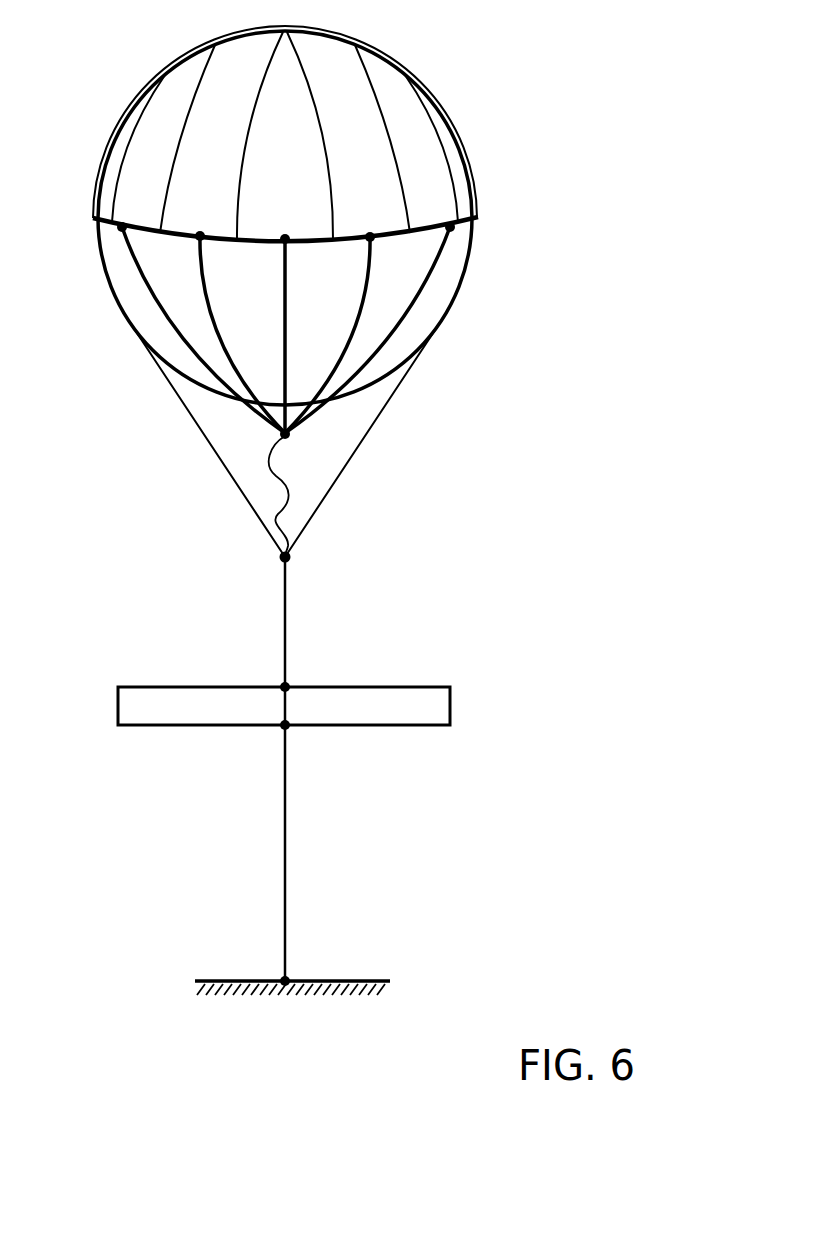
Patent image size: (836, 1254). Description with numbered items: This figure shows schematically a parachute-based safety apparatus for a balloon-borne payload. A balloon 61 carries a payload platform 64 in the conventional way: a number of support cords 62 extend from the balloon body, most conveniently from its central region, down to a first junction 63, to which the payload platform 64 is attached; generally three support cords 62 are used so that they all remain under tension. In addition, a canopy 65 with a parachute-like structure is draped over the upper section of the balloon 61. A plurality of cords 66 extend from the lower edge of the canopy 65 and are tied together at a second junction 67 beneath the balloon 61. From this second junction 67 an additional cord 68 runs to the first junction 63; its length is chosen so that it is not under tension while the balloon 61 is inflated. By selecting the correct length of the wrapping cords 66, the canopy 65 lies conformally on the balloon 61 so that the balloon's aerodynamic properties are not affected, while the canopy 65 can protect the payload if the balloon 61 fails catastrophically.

The balloon 61 is at (437, 300).
The support cords 62 is at (205, 443).
The first junction 63 is at (292, 555).
The payload platform 64 is at (451, 703).
The canopy 65 is at (460, 135).
The cords 66 is at (140, 287).
The second junction 67 is at (292, 438).
The additional cord 68 is at (277, 515).